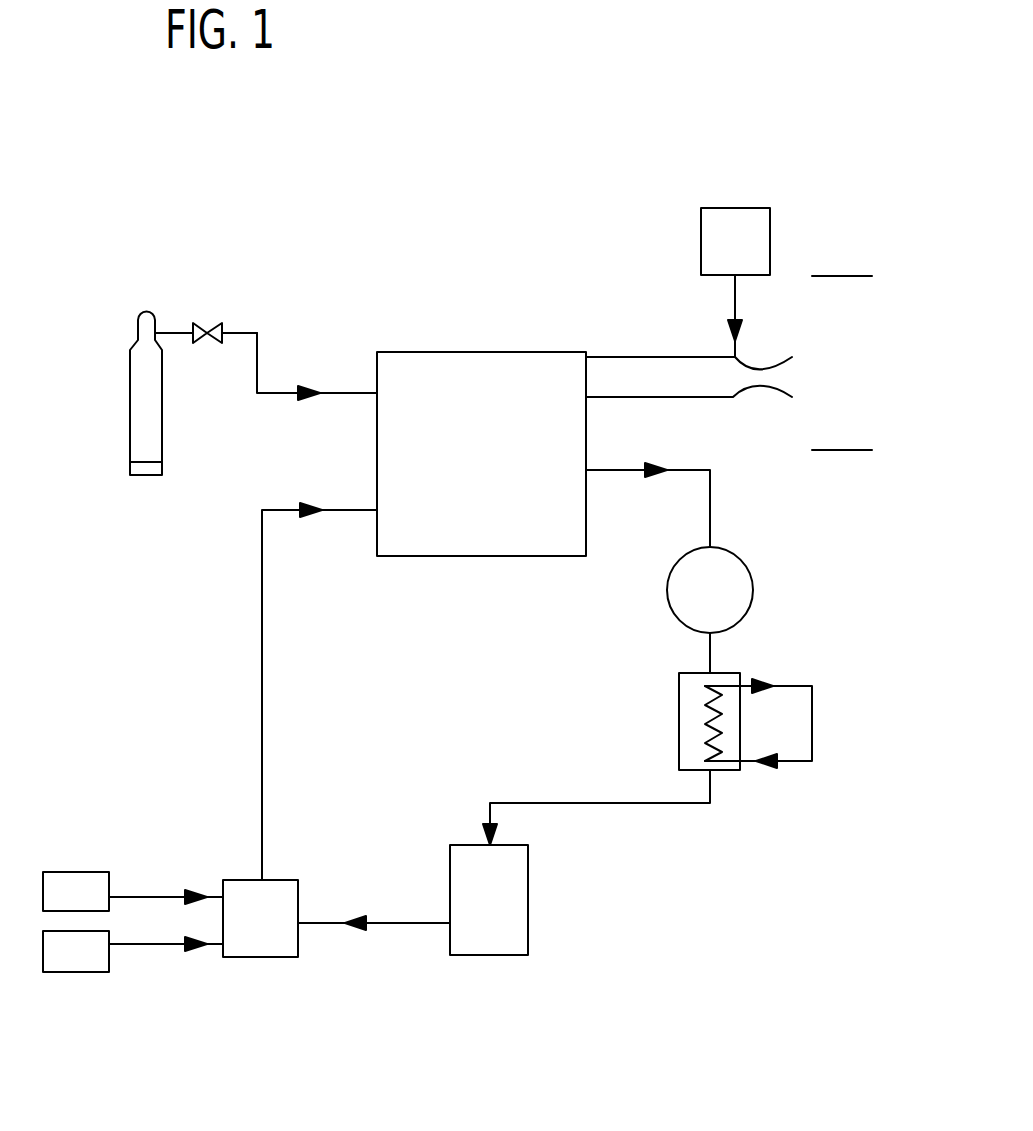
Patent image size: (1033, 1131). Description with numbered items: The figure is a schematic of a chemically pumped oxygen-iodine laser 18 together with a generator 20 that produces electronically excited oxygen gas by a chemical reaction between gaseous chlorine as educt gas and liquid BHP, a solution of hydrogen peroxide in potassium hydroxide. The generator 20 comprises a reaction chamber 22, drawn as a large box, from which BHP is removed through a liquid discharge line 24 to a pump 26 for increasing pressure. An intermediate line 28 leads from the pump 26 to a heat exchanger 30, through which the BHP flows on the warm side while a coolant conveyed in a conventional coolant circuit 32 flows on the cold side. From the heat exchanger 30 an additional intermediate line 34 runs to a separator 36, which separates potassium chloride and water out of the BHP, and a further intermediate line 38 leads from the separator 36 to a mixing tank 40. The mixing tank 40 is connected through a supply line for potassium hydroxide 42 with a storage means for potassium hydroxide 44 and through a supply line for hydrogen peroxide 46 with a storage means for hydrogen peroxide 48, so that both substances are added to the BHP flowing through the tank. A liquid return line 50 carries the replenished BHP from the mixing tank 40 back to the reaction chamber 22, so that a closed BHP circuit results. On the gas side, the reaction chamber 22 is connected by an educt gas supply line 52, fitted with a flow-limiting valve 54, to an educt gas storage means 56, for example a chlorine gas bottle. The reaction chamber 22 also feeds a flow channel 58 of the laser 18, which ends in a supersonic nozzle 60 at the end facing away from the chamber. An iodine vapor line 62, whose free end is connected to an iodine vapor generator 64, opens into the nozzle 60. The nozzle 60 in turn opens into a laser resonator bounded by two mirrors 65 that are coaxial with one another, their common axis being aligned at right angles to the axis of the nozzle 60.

The chemically pumped oxygen-iodine laser 18 is at (633, 212).
The generator 20 is at (433, 324).
The reaction chamber 22 is at (503, 352).
The liquid discharge line 24 is at (712, 482).
The pump for increasing pressure 26 is at (740, 577).
The intermediate line 28 is at (712, 653).
The heat exchanger 30 is at (679, 712).
The coolant circuit 32 is at (812, 718).
The additional intermediate line 34 is at (641, 805).
The separator 36 is at (528, 900).
The intermediate line 38 is at (393, 925).
The mixing tank 40 is at (288, 880).
The supply line for potassium hydroxide 42 is at (152, 945).
The storage means for potassium hydroxide 44 is at (75, 972).
The supply line for hydrogen peroxide 46 is at (158, 897).
The storage means for hydrogen peroxide 48 is at (75, 872).
The liquid return line 50 is at (260, 640).
The educt gas supply line 52 is at (257, 355).
The flow-limiting valve 54 is at (208, 325).
The educt gas storage means 56 is at (137, 350).
The flow channel 58 is at (615, 373).
The supersonic nozzle 60 is at (764, 368).
The iodine vapor line 62 is at (735, 287).
The iodine vapor generator 64 is at (752, 218).
The mirrors 65 is at (848, 276).